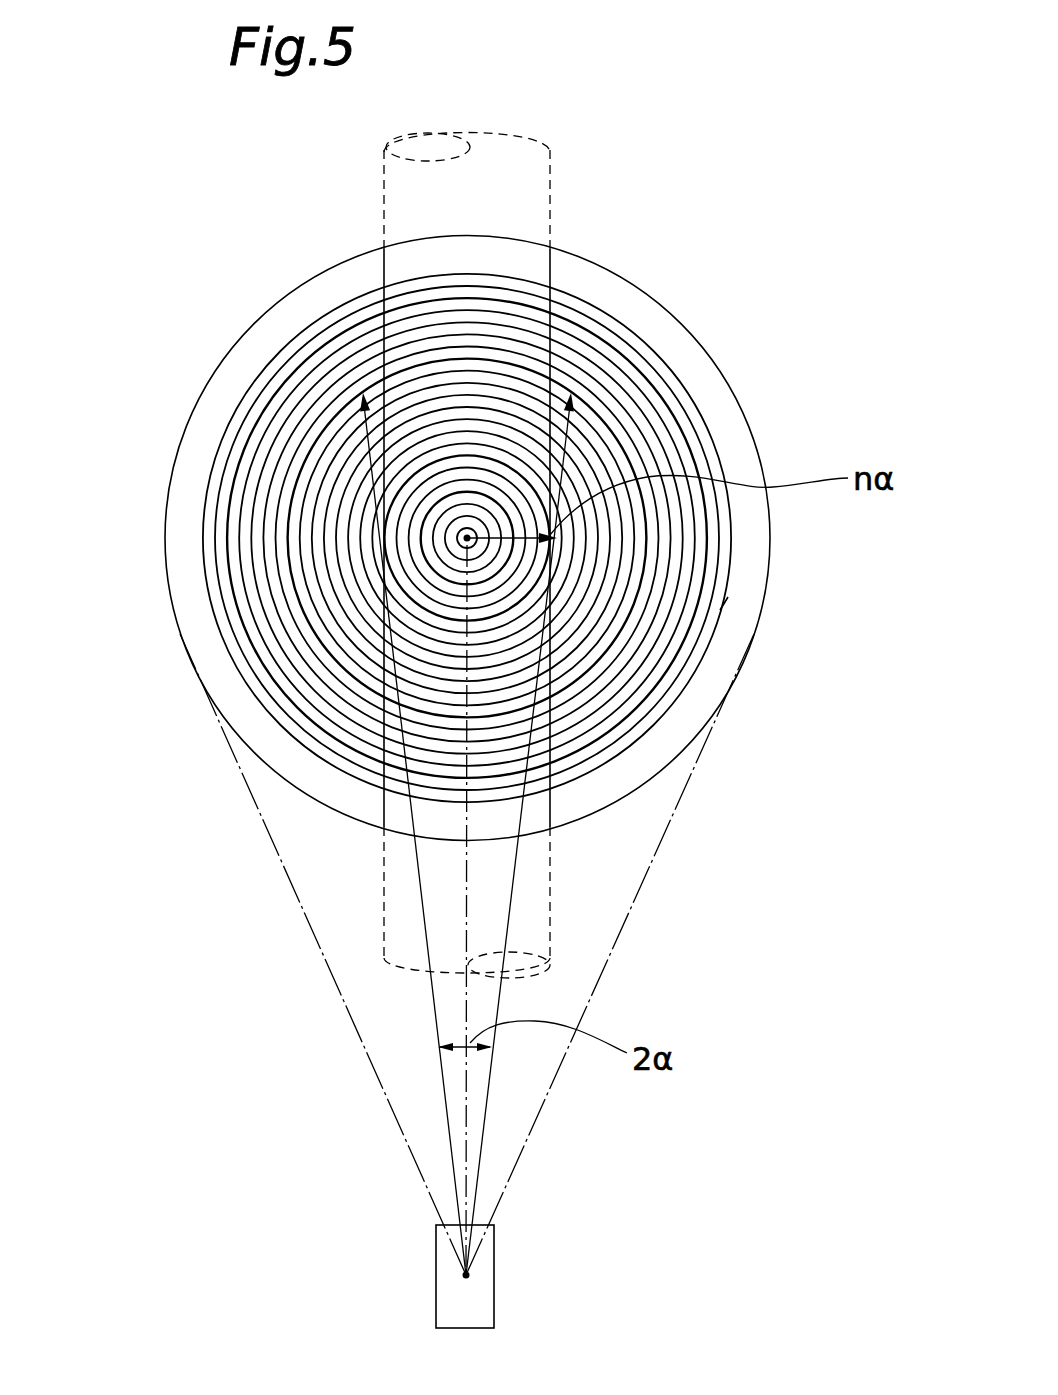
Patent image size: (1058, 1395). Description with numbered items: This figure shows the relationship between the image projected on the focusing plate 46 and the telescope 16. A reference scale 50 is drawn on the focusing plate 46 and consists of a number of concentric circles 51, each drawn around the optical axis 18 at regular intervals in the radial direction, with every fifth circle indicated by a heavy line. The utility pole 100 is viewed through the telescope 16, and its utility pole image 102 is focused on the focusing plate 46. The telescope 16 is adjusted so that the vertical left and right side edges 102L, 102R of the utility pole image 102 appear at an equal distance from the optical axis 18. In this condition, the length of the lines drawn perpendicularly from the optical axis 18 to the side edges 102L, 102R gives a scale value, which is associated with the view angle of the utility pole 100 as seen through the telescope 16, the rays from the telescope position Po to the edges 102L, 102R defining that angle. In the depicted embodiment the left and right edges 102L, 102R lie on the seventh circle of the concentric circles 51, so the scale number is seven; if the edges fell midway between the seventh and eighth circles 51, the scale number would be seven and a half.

The telescope 16 is at (436, 1249).
The optical axis 18 is at (463, 536).
The focusing plate 46 is at (716, 404).
The reference scale 50 is at (672, 362).
The concentric circles 51 is at (728, 597).
The utility pole 100 is at (552, 185).
The utility pole image 102 is at (552, 277).
The left side edge 102L is at (398, 706).
The right side edge 102R is at (536, 706).
The light source point Po is at (470, 1277).